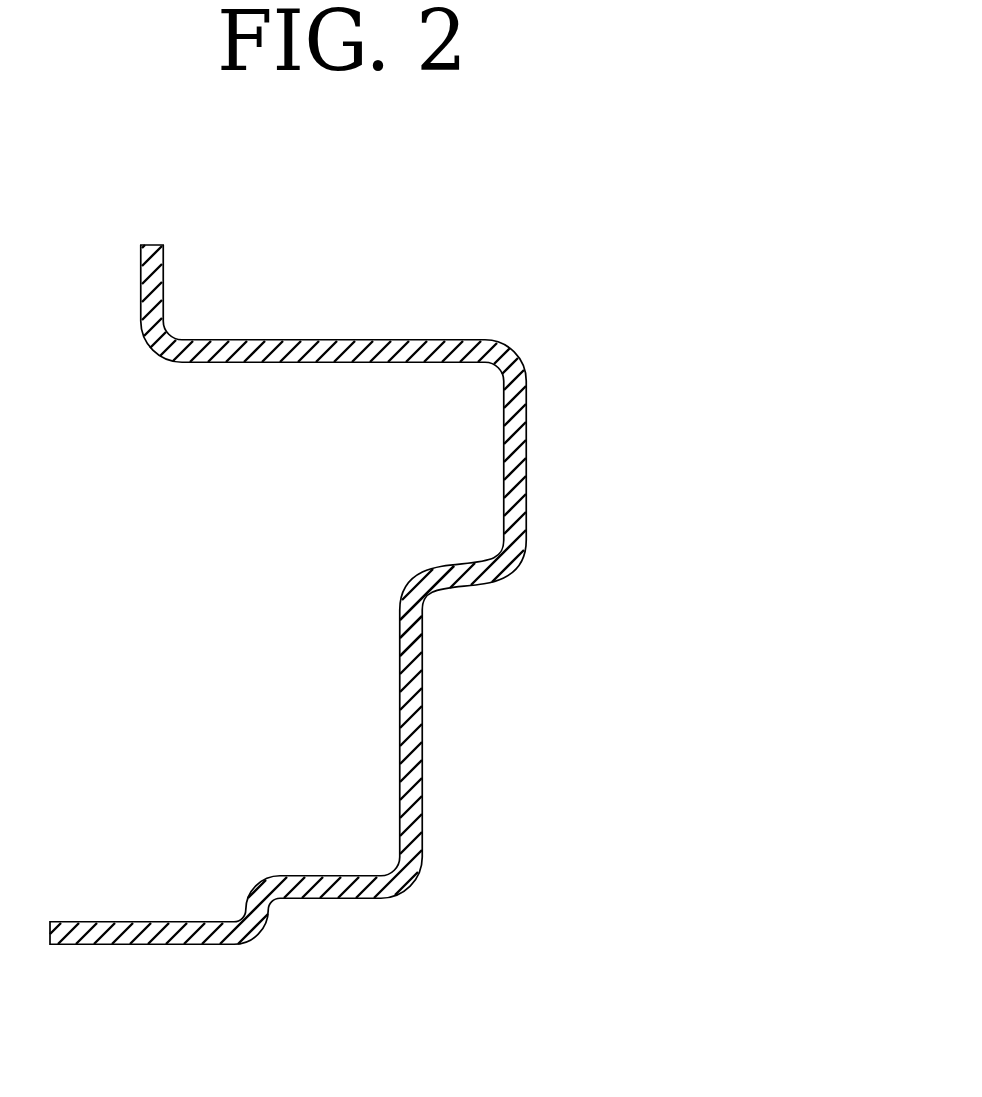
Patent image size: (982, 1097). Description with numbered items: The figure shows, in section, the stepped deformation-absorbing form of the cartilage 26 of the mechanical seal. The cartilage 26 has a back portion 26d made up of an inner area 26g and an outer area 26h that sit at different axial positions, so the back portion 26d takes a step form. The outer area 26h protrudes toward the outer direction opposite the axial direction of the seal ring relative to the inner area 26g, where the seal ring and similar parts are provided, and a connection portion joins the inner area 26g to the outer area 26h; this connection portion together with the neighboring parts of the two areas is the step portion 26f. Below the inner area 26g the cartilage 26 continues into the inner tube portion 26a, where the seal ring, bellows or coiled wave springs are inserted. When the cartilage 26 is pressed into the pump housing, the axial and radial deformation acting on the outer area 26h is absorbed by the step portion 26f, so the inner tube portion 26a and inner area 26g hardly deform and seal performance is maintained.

The cartilage 26 is at (461, 633).
The inner tube portion 26a is at (308, 877).
The back portion 26d is at (512, 635).
The step portion 26f is at (468, 583).
The inner area 26g is at (424, 790).
The outer area 26h is at (528, 418).